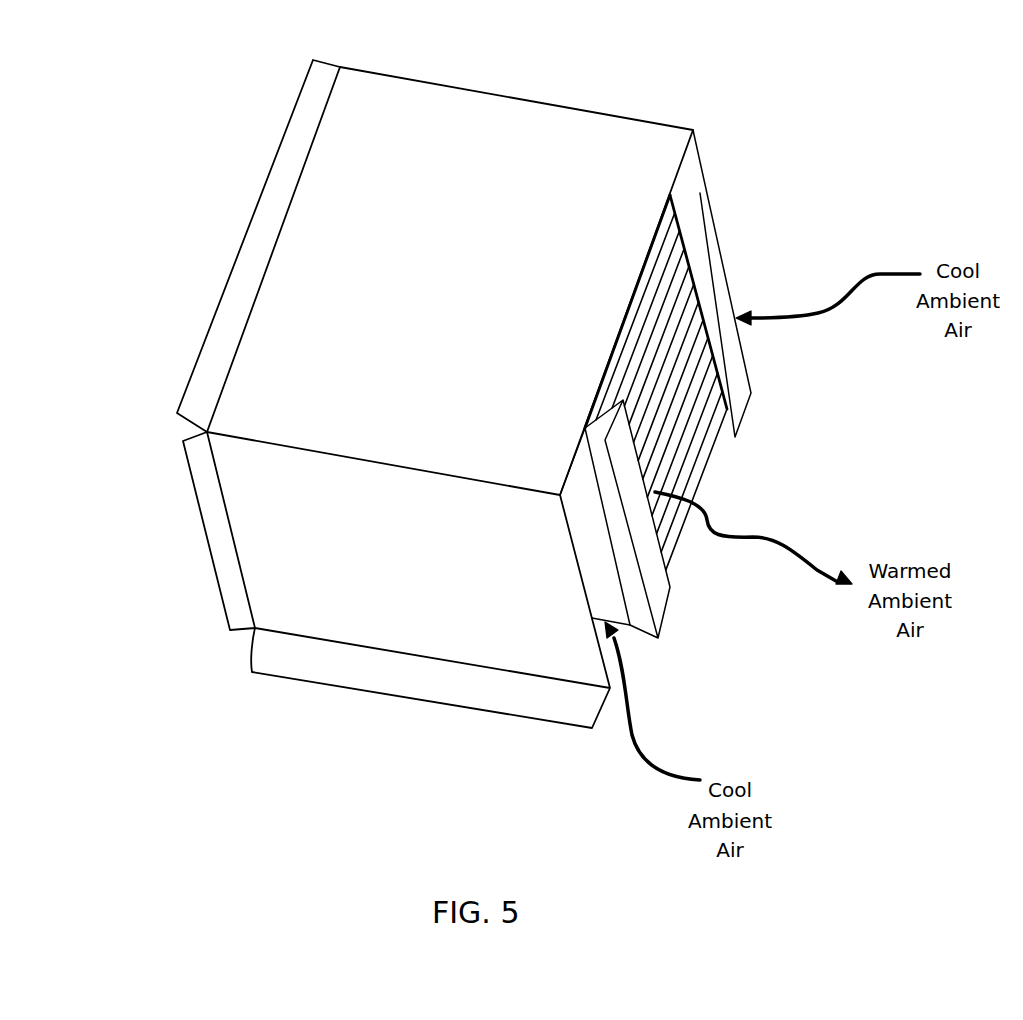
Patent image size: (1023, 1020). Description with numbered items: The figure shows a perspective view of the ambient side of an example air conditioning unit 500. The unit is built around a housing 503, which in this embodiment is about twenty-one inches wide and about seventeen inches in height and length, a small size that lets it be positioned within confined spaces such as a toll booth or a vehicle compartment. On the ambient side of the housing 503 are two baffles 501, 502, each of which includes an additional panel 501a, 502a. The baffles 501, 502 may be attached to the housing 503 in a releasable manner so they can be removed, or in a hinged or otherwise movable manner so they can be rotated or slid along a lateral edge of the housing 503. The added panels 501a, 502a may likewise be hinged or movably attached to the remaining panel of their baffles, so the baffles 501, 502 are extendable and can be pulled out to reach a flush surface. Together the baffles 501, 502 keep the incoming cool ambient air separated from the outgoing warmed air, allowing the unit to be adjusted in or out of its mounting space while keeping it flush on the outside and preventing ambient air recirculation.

The air conditioning unit 500 is at (416, 383).
The housing 503 is at (290, 280).
The baffle 502 is at (745, 368).
The additional panel 502a is at (706, 455).
The baffle 501 is at (668, 588).
The additional panel 501a is at (635, 593).